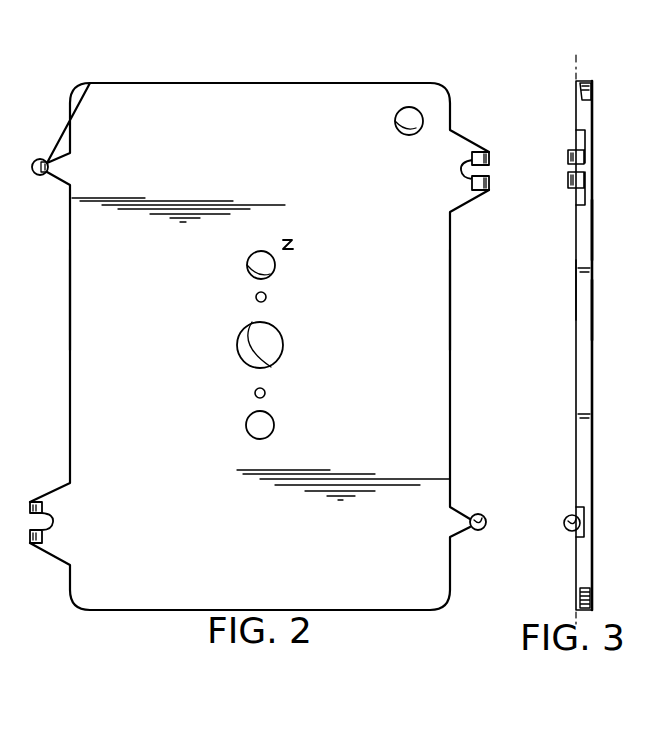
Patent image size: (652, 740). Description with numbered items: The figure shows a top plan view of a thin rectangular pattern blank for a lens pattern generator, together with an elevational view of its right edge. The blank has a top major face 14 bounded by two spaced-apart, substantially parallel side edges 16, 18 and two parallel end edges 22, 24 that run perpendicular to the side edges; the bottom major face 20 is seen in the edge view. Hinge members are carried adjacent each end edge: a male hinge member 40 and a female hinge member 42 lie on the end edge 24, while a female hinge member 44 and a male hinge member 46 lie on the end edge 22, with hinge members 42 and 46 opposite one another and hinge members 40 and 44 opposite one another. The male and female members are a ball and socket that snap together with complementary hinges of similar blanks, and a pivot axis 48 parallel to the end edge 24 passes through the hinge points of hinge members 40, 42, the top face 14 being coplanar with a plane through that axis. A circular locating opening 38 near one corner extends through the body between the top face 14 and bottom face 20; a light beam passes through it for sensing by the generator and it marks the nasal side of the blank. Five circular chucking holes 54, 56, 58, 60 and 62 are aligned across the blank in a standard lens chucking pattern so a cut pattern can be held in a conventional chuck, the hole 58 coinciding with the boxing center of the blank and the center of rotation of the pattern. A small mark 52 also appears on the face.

In FIG. 2, the top major face 14 is at (384, 380).
In FIG. 3, the top major face 14 is at (576, 286).
In FIG. 2, the side edge 16 is at (293, 83).
In FIG. 2, the side edge 18 is at (367, 611).
In FIG. 3, the bottom major face 20 is at (593, 228).
In FIG. 2, the end edge 22 is at (70, 280).
In FIG. 2, the end edge 24 is at (450, 296).
In FIG. 3, the end edge 24 is at (586, 305).
In FIG. 2, the locating opening 38 is at (398, 126).
In FIG. 2, the male hinge member 40 is at (480, 514).
In FIG. 3, the male hinge member 40 is at (566, 532).
In FIG. 2, the female hinge member 42 is at (488, 151).
In FIG. 3, the female hinge member 42 is at (567, 183).
In FIG. 2, the female hinge member 44 is at (43, 553).
In FIG. 2, the male hinge member 46 is at (48, 159).
In FIG. 3, the pivot axis 48 is at (578, 82).
In FIG. 2, the marker 52 is at (288, 241).
In FIG. 2, the chucking hole 54 is at (250, 264).
In FIG. 2, the chucking hole 56 is at (256, 296).
In FIG. 2, the chucking hole 58 is at (262, 326).
In FIG. 2, the chucking hole 60 is at (265, 390).
In FIG. 2, the chucking hole 62 is at (262, 438).